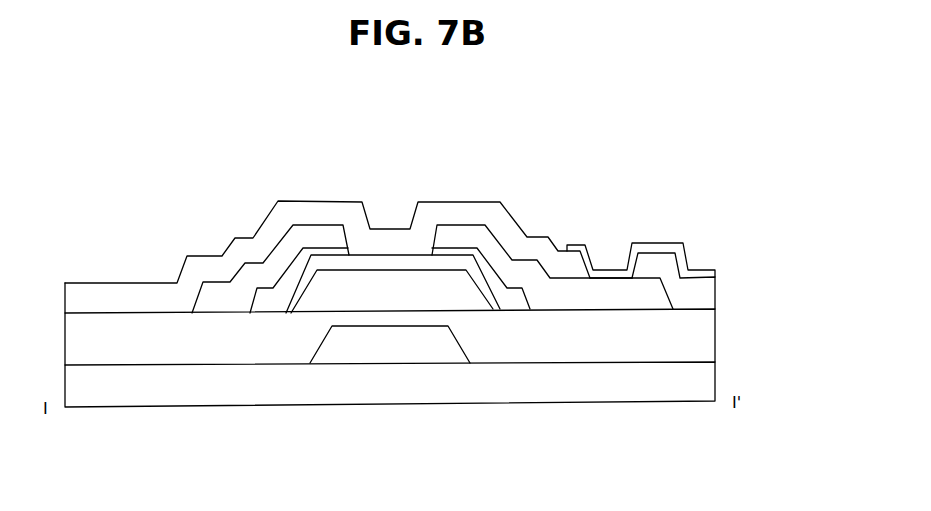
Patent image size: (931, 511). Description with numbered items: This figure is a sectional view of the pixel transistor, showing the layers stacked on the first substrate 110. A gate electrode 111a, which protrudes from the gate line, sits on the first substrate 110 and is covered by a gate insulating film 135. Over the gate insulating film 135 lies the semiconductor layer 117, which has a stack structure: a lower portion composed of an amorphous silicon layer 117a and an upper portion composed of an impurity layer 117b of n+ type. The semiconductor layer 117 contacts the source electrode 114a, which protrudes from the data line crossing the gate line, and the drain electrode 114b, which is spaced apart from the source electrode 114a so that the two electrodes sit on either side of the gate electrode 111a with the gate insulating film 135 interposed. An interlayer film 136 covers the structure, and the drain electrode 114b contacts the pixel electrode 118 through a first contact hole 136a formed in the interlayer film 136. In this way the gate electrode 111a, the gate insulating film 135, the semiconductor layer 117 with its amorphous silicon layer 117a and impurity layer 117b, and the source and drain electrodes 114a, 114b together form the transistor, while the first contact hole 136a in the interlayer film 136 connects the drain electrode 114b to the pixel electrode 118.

The first substrate 110 is at (713, 378).
The gate electrode 111a is at (386, 346).
The source electrode 114a is at (322, 232).
The drain electrode 114b is at (463, 230).
The semiconductor layer 117 is at (168, 182).
The amorphous silicon layer 117a is at (278, 270).
The impurity layer 117b is at (455, 250).
The pixel electrode 118 is at (713, 269).
The gate insulating film 135 is at (713, 340).
The interlayer film 136 is at (713, 281).
The first contact hole 136a is at (612, 252).